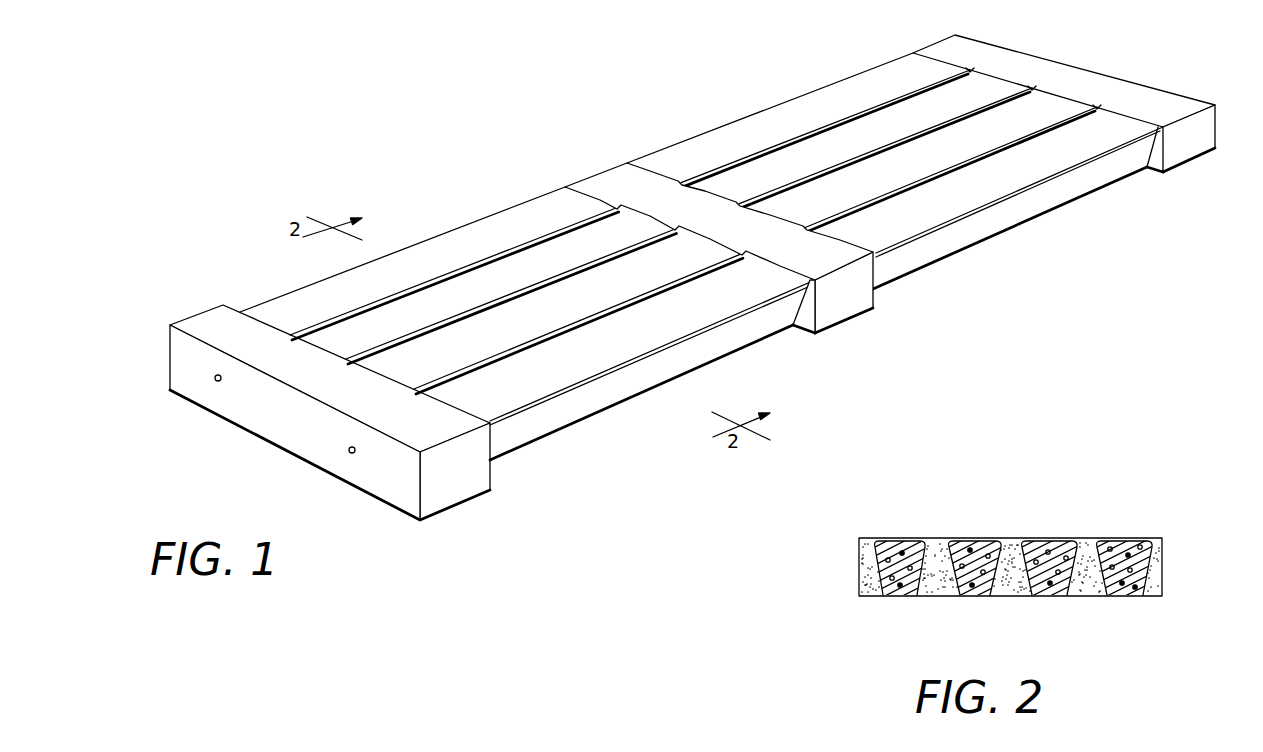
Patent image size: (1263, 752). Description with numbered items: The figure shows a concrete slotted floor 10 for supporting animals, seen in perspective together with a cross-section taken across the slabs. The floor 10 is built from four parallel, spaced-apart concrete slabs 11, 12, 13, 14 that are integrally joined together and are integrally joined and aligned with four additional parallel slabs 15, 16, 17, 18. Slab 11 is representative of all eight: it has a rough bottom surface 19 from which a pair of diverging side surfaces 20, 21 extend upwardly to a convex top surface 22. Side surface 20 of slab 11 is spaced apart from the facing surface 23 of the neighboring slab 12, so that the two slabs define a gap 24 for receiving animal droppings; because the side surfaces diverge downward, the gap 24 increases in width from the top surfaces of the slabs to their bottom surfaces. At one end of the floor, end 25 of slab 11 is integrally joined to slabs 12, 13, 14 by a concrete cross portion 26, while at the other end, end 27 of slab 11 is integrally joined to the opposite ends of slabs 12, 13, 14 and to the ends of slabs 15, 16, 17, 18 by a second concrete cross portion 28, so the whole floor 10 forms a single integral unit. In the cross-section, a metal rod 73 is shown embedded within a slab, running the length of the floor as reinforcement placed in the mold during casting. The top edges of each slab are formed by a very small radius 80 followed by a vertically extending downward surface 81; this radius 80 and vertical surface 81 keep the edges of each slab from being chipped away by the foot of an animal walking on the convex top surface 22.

In FIG. 1, the concrete slotted floor 10 is at (561, 104).
In FIG. 1, the slab 11 is at (627, 345).
In FIG. 2, the slab 11 is at (1145, 567).
In FIG. 1, the slab 12 is at (587, 300).
In FIG. 2, the slab 12 is at (1050, 583).
In FIG. 1, the slab 13 is at (518, 275).
In FIG. 1, the slab 14 is at (445, 255).
In FIG. 1, the slab 15 is at (977, 187).
In FIG. 1, the slab 16 is at (913, 167).
In FIG. 1, the slab 17 is at (855, 143).
In FIG. 1, the slab 18 is at (800, 117).
In FIG. 2, the rough bottom surface 19 is at (1123, 597).
In FIG. 2, the side surface 20 is at (1098, 582).
In FIG. 2, the side surface 21 is at (1143, 583).
In FIG. 2, the convex top surface 22 is at (897, 541).
In FIG. 2, the surface 23 is at (1072, 575).
In FIG. 1, the gap 24 is at (719, 221).
In FIG. 2, the gap 24 is at (1098, 530).
In FIG. 1, the end 25 is at (477, 407).
In FIG. 1, the concrete cross portion 26 is at (268, 355).
In FIG. 1, the end 27 is at (767, 268).
In FIG. 1, the concrete cross portion 28 is at (855, 280).
In FIG. 2, the metal rod 73 is at (972, 585).
In FIG. 2, the radius 80 is at (897, 543).
In FIG. 2, the vertical surface 81 is at (873, 548).